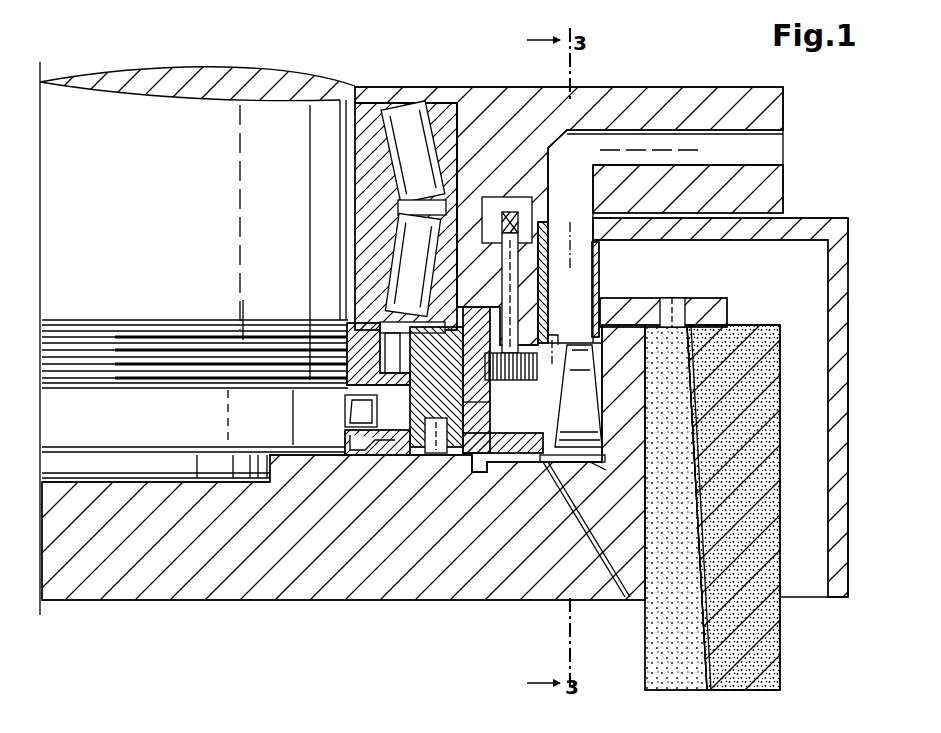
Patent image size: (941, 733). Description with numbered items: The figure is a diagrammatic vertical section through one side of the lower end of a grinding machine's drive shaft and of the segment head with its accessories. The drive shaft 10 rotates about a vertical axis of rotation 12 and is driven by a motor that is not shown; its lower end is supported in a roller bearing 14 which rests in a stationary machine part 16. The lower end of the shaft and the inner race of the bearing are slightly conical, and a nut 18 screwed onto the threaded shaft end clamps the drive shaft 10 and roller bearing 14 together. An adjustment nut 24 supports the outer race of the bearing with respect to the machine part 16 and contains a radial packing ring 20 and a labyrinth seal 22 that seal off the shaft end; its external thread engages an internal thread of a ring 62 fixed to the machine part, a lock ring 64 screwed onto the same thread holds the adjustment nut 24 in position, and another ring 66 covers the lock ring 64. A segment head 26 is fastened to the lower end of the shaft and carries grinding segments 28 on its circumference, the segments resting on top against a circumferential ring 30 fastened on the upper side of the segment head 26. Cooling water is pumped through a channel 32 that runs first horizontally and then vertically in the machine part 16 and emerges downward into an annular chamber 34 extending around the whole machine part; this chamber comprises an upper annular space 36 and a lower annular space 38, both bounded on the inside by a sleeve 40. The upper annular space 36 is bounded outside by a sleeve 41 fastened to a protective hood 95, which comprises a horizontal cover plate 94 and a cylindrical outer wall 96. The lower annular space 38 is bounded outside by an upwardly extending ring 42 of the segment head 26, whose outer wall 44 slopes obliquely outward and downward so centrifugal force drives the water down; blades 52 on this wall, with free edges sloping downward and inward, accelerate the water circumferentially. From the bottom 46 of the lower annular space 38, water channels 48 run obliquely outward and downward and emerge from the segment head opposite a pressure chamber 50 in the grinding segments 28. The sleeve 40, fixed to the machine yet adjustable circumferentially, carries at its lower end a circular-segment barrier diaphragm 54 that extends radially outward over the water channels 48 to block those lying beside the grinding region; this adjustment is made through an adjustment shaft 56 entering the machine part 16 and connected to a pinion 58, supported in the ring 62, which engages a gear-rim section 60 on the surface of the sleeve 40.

The drive shaft 10 is at (132, 169).
The vertical axis of rotation 12 is at (43, 72).
The roller bearing 14 is at (368, 97).
The stationary machine part 16 is at (683, 100).
The nut 18 is at (368, 320).
The radial packing ring 20 is at (345, 412).
The labyrinth seal 22 is at (345, 442).
The adjustment nut 24 is at (415, 458).
The segment head 26 is at (238, 582).
The grinding segments 28 is at (721, 507).
The circumferential ring 30 is at (722, 318).
The channel 32 is at (770, 148).
The annular chamber 34 is at (606, 350).
The upper annular space 36 is at (584, 262).
The lower annular space 38 is at (600, 388).
The sleeve 40 is at (548, 302).
The sleeve 41 is at (600, 283).
The ring 42 is at (666, 320).
The outer wall 44 is at (602, 432).
The bottom 46 is at (600, 468).
The water channels 48 is at (628, 540).
The pressure chamber 50 is at (662, 650).
The blades 52 is at (584, 470).
The barrier diaphragm 54 is at (560, 466).
The adjustment shaft 56 is at (522, 235).
The pinion 58 is at (470, 377).
The gear-rim section 60 is at (553, 343).
The ring 62 is at (493, 318).
The lock ring 64 is at (470, 402).
The ring 66 is at (487, 463).
The cover plate 94 is at (803, 218).
The protective hood 95 is at (856, 236).
The outer wall 96 is at (850, 383).